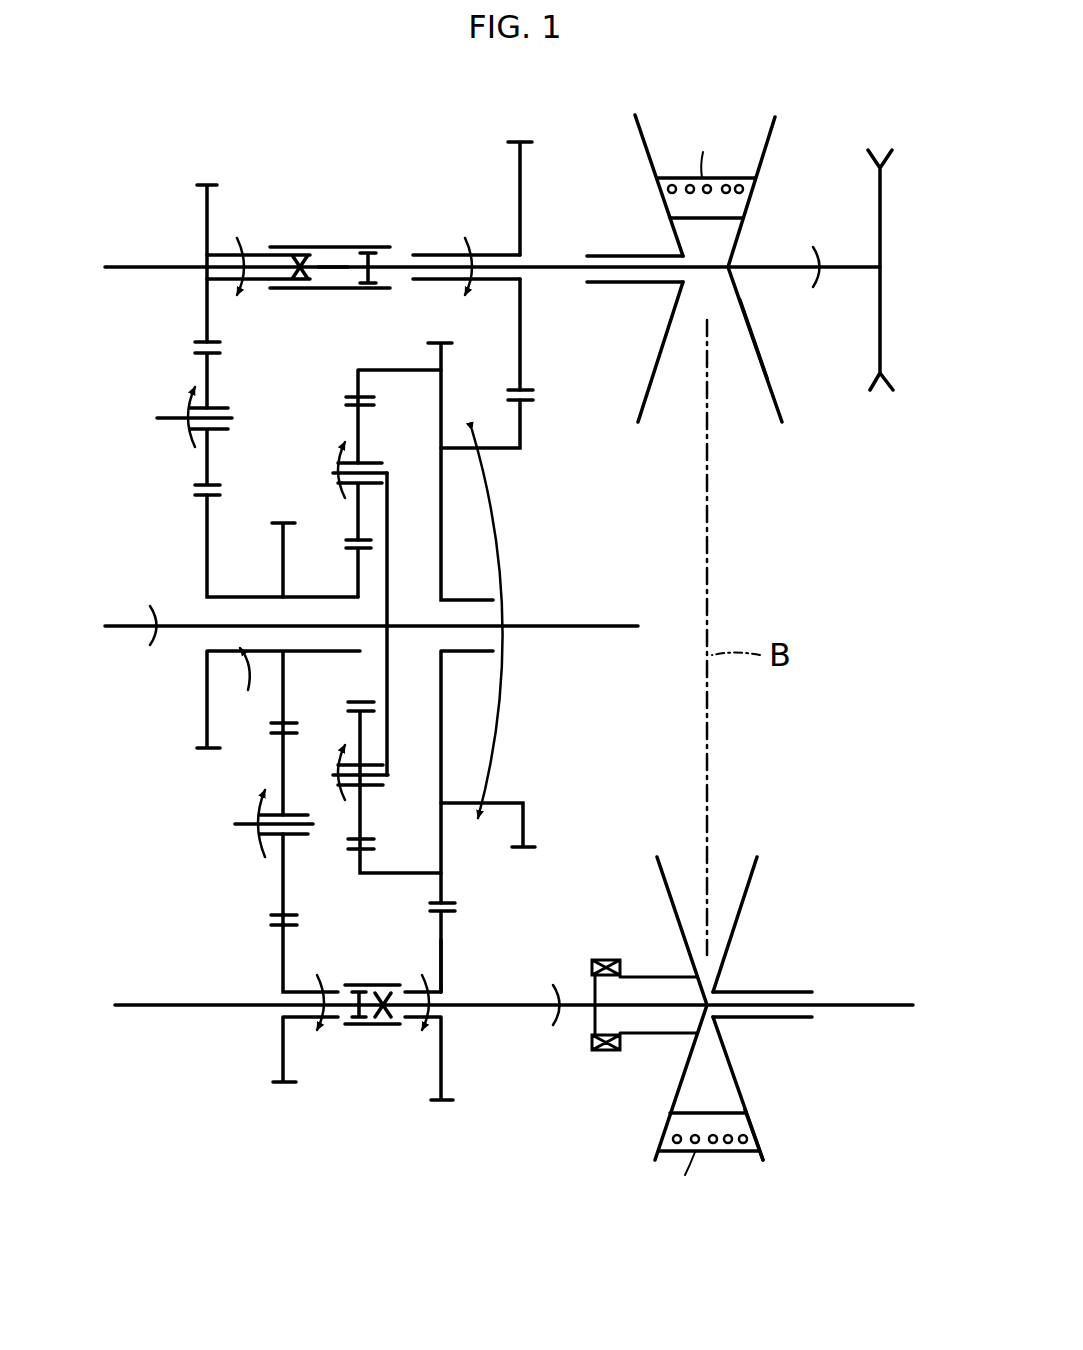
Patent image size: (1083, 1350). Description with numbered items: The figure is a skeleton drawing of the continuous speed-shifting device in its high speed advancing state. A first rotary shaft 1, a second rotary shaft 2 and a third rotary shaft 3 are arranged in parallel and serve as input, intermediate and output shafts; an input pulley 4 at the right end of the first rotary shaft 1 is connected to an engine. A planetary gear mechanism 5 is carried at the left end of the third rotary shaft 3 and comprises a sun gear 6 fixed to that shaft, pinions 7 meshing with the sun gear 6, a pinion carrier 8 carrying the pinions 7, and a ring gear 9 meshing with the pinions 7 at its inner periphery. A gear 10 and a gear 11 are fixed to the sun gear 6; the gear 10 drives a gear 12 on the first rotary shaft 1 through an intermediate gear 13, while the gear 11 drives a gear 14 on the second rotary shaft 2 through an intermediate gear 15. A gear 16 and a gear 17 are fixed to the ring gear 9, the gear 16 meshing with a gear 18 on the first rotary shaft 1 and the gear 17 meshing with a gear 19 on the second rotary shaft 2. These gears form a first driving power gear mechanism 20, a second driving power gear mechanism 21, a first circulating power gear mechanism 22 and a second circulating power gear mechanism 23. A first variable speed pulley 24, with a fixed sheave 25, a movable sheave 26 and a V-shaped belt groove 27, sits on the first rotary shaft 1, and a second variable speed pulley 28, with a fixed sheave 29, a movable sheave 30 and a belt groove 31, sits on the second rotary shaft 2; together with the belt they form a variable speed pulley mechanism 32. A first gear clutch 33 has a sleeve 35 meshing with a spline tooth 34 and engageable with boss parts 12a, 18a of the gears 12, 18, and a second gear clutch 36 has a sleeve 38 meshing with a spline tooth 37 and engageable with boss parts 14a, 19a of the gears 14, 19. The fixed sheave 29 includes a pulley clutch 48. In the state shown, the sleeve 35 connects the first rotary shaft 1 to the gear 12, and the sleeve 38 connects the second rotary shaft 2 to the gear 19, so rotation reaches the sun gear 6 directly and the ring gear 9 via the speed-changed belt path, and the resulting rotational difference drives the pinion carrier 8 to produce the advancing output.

The first rotary shaft 1 is at (852, 268).
The second rotary shaft 2 is at (900, 1010).
The third rotary shaft 3 is at (593, 626).
The input pulley 4 is at (882, 185).
The planetary gear mechanism 5 is at (330, 488).
The sun gear 6 is at (358, 560).
The pinions 7 is at (360, 428).
The pinion carrier 8 is at (388, 683).
The ring gear 9 is at (397, 368).
The gear 10 is at (207, 540).
The gear 11 is at (283, 540).
The gear 12 is at (207, 215).
The boss part 12a is at (256, 255).
The intermediate gear 13 is at (205, 368).
The gear 14 is at (283, 1045).
The boss part 14a is at (300, 1017).
The intermediate gear 15 is at (283, 880).
The gear 16 is at (522, 425).
The gear 17 is at (443, 885).
The gear 18 is at (522, 183).
The boss part 18a is at (443, 255).
The gear 19 is at (444, 1070).
The boss part 19a is at (405, 1017).
The first driving power gear mechanism 20 is at (155, 415).
The second driving power gear mechanism 21 is at (543, 385).
The first circulating power gear mechanism 22 is at (468, 917).
The second circulating power gear mechanism 23 is at (220, 848).
The first variable speed pulley 24 is at (733, 268).
The fixed sheave 25 is at (765, 368).
The movable sheave 26 is at (662, 352).
The belt groove 27 is at (771, 395).
The second variable speed pulley 28 is at (699, 1053).
The fixed sheave 29 is at (665, 1128).
The movable sheave 30 is at (741, 1092).
The belt groove 31 is at (757, 1162).
The variable speed pulley mechanism 32 is at (780, 705).
The first gear clutch 33 is at (345, 247).
The spline tooth 34 is at (364, 285).
The sleeve 35 is at (370, 253).
The second gear clutch 36 is at (365, 1032).
The spline tooth 37 is at (352, 990).
The sleeve 38 is at (378, 985).
The pulley clutch 48 is at (605, 960).